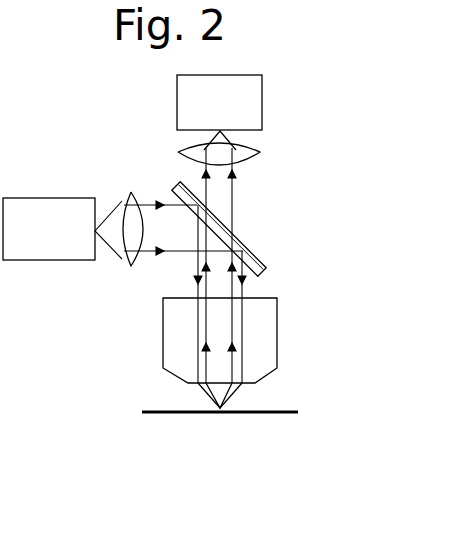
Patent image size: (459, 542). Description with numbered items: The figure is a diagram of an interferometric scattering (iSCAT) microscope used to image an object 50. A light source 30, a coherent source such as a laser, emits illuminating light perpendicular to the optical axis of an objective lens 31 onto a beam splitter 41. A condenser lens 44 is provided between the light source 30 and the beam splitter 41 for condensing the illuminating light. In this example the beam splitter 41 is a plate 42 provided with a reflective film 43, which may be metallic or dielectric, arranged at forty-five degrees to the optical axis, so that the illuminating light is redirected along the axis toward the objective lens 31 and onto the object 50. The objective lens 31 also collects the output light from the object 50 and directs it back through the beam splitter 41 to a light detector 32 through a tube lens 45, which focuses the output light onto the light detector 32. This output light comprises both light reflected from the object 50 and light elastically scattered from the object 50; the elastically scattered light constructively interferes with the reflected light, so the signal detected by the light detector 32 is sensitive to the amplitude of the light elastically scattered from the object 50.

The light source 30 is at (36, 197).
The objective lens 31 is at (263, 352).
The light detector 32 is at (258, 88).
The beam splitter 41 is at (223, 205).
The plate 42 is at (258, 275).
The reflective film 43 is at (253, 253).
The condenser lens 44 is at (129, 263).
The tube lens 45 is at (244, 156).
The object 50 is at (178, 415).